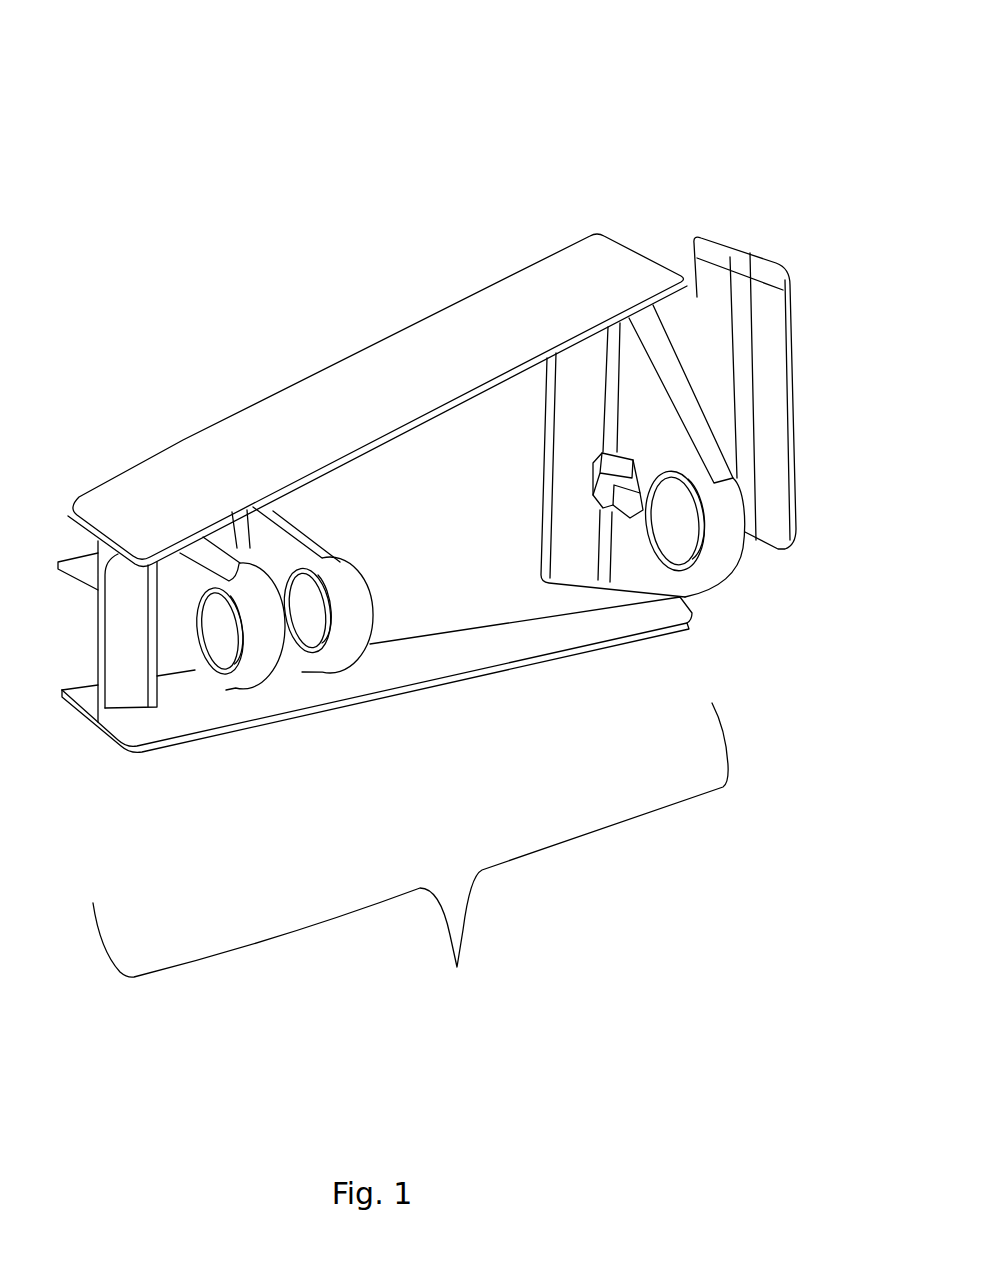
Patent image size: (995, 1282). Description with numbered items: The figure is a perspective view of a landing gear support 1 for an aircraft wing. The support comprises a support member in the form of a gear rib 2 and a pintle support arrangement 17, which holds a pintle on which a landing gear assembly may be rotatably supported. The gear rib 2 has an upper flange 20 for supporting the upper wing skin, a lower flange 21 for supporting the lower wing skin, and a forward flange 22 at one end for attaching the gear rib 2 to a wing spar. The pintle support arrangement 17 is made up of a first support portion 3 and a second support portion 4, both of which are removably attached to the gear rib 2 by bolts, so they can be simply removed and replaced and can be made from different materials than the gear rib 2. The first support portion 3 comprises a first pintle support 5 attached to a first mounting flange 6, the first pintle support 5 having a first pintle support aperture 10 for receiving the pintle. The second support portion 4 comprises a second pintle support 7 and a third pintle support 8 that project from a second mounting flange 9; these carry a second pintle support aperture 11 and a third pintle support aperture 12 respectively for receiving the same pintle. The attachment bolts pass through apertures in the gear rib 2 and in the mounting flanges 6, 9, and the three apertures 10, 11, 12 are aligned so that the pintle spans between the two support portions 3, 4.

The landing gear support 1 is at (172, 141).
The gear rib 2 is at (437, 578).
The first support portion 3 is at (643, 563).
The second support portion 4 is at (183, 667).
The first pintle support 5 is at (660, 455).
The first mounting flange 6 is at (577, 425).
The second pintle support 7 is at (313, 660).
The third pintle support 8 is at (221, 687).
The second mounting flange 9 is at (132, 678).
The first pintle support aperture 10 is at (700, 557).
The second pintle support aperture 11 is at (312, 630).
The third pintle support aperture 12 is at (231, 657).
The pintle support arrangement 17 is at (410, 857).
The upper flange 20 is at (318, 428).
The lower flange 21 is at (513, 657).
The forward flange 22 is at (791, 377).